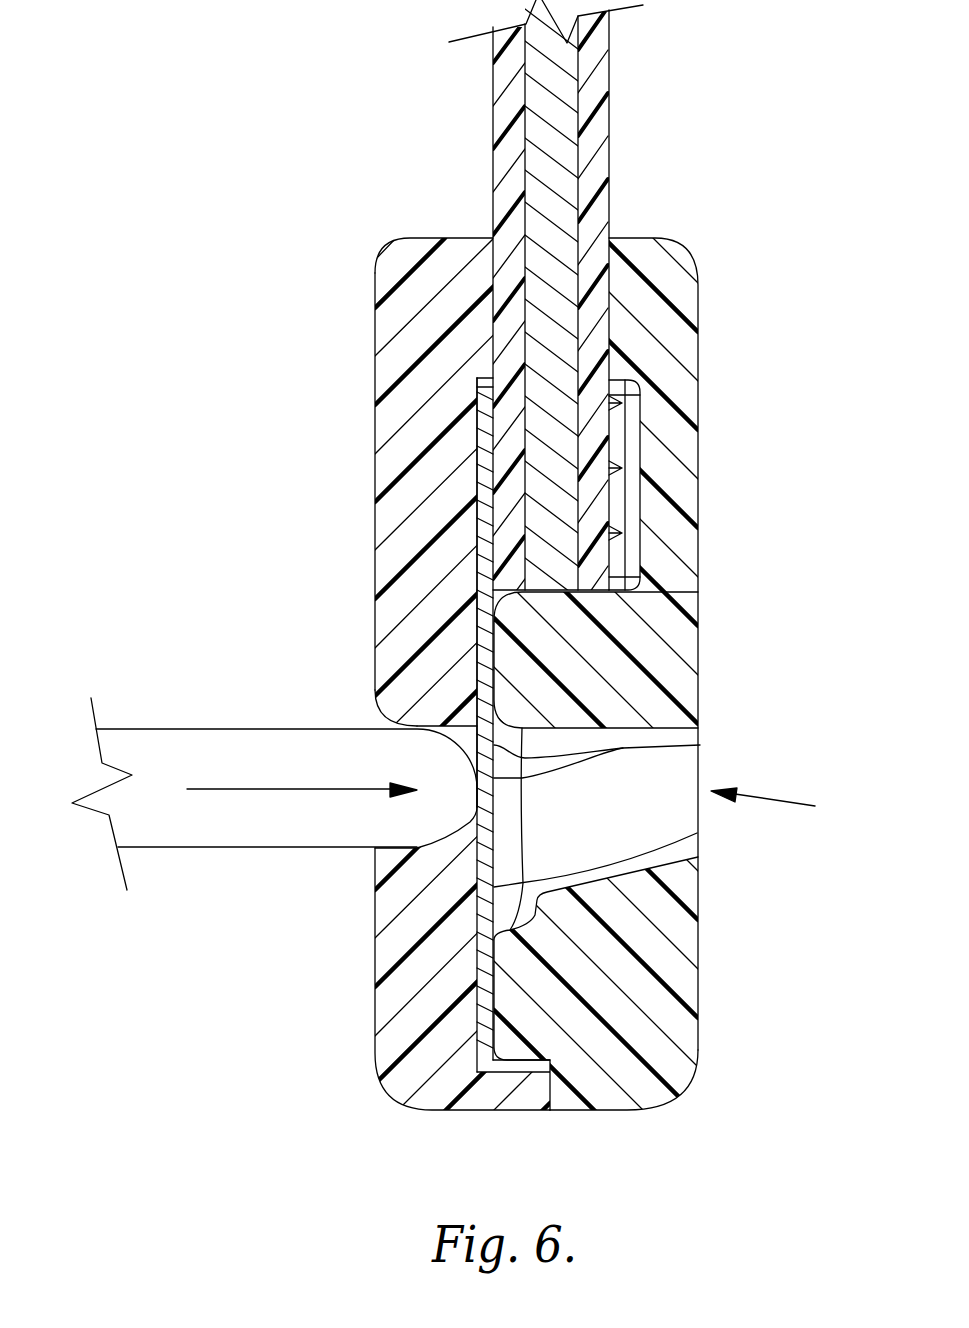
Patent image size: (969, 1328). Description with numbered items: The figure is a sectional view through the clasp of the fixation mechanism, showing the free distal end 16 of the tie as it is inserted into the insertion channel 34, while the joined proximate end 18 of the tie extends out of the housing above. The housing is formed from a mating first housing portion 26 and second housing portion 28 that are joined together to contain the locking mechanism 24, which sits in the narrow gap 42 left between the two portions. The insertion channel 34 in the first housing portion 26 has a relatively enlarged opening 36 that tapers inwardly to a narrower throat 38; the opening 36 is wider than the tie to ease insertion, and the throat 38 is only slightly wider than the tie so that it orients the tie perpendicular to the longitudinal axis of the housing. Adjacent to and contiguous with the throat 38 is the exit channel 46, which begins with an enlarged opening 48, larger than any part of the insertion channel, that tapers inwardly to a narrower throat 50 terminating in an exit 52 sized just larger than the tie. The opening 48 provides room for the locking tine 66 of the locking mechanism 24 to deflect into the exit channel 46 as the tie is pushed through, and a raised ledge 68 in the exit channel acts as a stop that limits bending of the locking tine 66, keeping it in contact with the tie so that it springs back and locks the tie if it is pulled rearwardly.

The free distal end 16 is at (353, 818).
The joined proximate end 18 is at (505, 117).
The locking mechanism 24 is at (493, 450).
The first housing portion 26 is at (403, 257).
The second housing portion 28 is at (695, 308).
The insertion channel 34 is at (342, 717).
The opening 36 is at (375, 713).
The throat 38 is at (467, 735).
The narrow gap 42 is at (482, 377).
The exit channel 46 is at (784, 804).
The opening 48 is at (513, 838).
The throat 50 is at (627, 779).
The exit 52 is at (692, 830).
The locking tine 66 is at (485, 842).
The ledge 68 is at (612, 930).